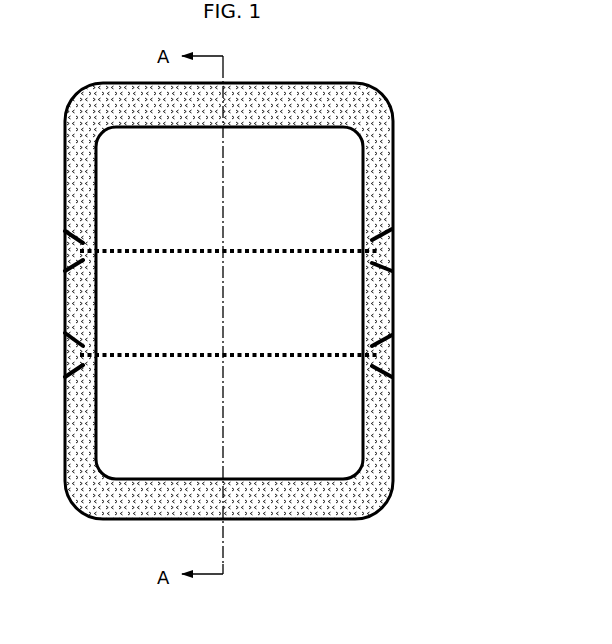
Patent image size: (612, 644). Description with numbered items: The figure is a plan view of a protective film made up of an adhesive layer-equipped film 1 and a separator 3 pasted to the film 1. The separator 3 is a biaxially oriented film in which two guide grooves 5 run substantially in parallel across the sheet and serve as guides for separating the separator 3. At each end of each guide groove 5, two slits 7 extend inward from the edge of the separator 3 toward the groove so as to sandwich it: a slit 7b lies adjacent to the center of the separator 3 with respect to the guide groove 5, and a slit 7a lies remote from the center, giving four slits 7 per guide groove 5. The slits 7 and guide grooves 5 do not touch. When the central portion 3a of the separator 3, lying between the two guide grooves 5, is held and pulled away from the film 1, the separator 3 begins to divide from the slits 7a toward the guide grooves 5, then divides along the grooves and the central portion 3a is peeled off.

The adhesive layer-equipped film 1 is at (345, 174).
The separator 3 is at (325, 88).
The central portion 3a is at (385, 302).
The guide groove 5 is at (309, 358).
The slit 7 is at (462, 222).
The slit remote from the center 7a is at (398, 232).
The slit adjacent to the center 7b is at (398, 270).